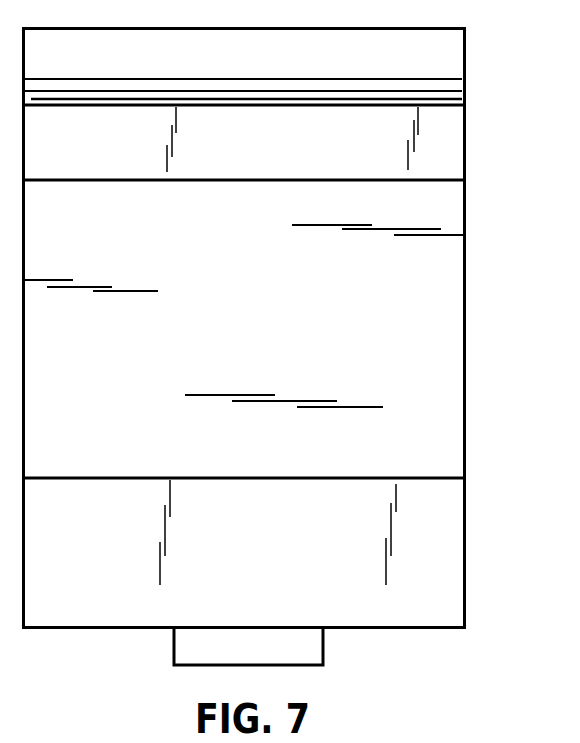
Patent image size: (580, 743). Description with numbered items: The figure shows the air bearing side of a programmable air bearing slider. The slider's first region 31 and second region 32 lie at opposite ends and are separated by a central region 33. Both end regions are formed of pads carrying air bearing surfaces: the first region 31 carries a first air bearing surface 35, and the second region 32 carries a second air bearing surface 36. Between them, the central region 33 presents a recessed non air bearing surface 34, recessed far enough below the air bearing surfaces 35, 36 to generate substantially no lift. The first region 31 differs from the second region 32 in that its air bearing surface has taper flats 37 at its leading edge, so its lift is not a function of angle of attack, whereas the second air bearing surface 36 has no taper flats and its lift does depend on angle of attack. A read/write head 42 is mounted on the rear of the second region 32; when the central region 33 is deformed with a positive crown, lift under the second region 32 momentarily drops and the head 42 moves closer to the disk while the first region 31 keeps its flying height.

The first region 31 is at (258, 153).
The second region 32 is at (265, 566).
The central region 33 is at (257, 330).
The recessed non air bearing surface 34 is at (453, 410).
The first air bearing surface 35 is at (452, 133).
The second air bearing surface 36 is at (452, 565).
The taper flats 37 is at (450, 73).
The read/write head 42 is at (313, 647).